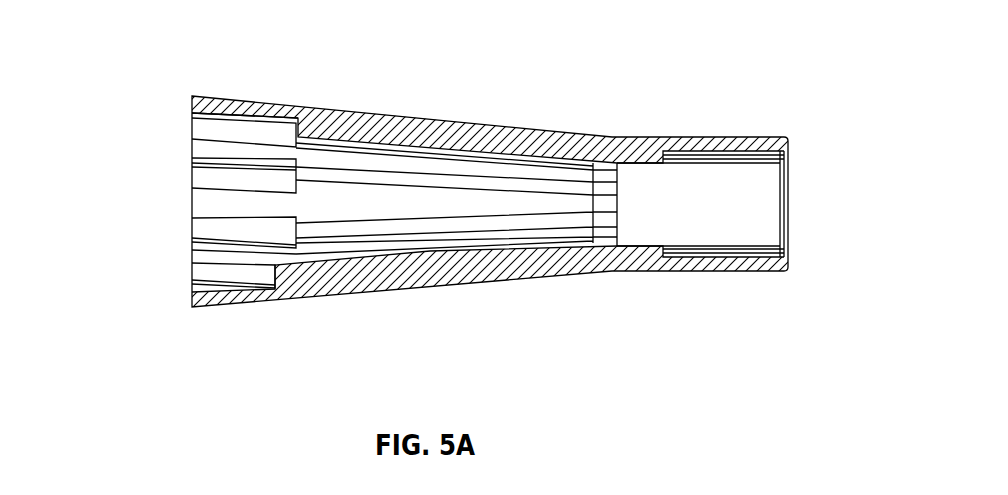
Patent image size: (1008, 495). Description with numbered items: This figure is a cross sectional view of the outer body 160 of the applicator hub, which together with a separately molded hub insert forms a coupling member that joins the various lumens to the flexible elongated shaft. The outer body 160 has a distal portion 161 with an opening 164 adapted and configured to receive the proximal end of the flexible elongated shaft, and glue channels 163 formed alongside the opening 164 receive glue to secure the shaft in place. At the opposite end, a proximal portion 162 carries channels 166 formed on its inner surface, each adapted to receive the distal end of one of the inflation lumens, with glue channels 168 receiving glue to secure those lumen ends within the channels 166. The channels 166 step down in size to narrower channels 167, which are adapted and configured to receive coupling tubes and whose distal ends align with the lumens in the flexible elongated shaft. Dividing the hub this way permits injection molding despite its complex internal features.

The outer body 160 is at (486, 98).
The distal portion 161 is at (712, 137).
The proximal portion 162 is at (450, 286).
The glue channels 163 is at (790, 152).
The opening 164 is at (736, 205).
The channels 166 is at (203, 130).
The channels 167 is at (437, 251).
The glue channels 168 is at (192, 113).